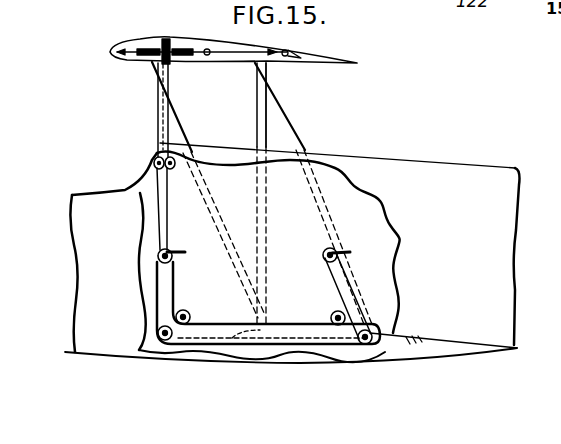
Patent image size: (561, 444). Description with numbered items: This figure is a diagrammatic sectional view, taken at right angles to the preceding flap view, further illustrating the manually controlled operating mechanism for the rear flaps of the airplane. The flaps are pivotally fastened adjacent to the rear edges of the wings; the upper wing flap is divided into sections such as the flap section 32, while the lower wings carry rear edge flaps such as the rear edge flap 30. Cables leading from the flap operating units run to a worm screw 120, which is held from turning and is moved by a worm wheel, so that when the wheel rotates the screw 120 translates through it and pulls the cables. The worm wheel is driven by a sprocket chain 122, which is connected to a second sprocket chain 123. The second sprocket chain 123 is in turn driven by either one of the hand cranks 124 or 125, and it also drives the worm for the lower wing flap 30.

The rear edge flap 30 is at (437, 346).
The flap section 32 is at (333, 67).
The worm screw 120 is at (147, 54).
The sprocket chain 122 is at (207, 333).
The second sprocket chain 123 is at (183, 344).
The hand crank 124 is at (185, 252).
The hand crank 125 is at (350, 252).